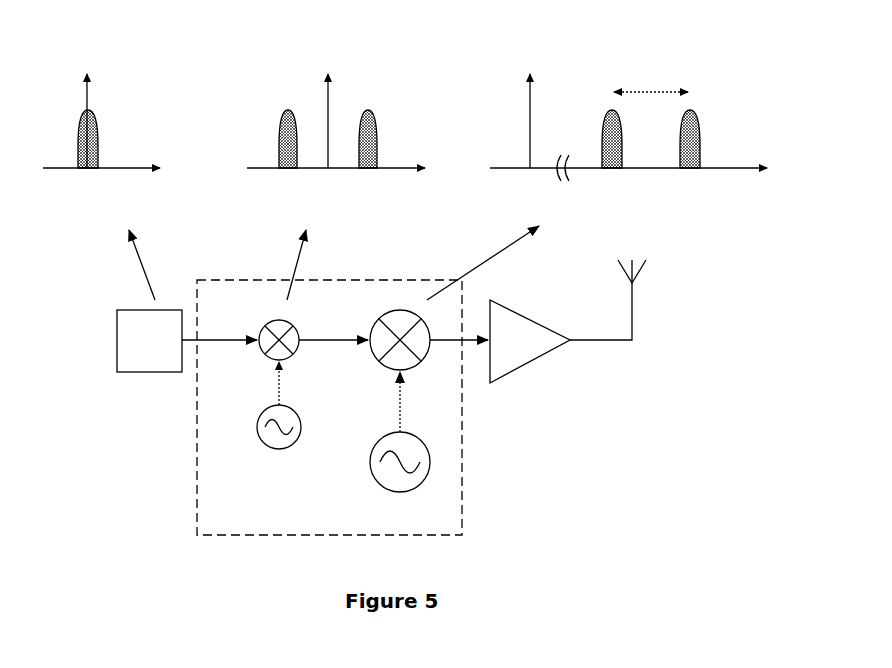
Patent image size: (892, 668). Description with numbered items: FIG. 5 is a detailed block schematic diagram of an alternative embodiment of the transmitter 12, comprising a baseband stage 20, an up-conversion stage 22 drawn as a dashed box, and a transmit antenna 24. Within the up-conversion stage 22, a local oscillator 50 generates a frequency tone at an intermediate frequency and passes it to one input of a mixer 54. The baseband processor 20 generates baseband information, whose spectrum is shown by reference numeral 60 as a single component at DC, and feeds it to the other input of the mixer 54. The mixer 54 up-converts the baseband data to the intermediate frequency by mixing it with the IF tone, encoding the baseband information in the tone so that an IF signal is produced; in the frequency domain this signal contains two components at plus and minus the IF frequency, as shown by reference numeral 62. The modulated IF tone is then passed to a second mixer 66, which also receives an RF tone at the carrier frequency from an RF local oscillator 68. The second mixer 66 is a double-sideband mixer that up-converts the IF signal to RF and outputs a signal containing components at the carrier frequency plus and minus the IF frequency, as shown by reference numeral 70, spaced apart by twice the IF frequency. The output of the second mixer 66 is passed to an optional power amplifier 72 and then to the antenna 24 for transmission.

The transmitter 12 is at (736, 490).
The baseband stage 20 is at (117, 340).
The up-conversion stage 22 is at (462, 490).
The transmit antenna 24 is at (632, 293).
The local oscillator 50 is at (297, 413).
The mixer 54 is at (296, 325).
The baseband information 60 is at (119, 66).
The IF signal frequency components 62 is at (397, 66).
The second mixer 66 is at (409, 310).
The RF local oscillator 68 is at (430, 462).
The RF signal frequency components 70 is at (598, 64).
The power amplifier 72 is at (530, 320).